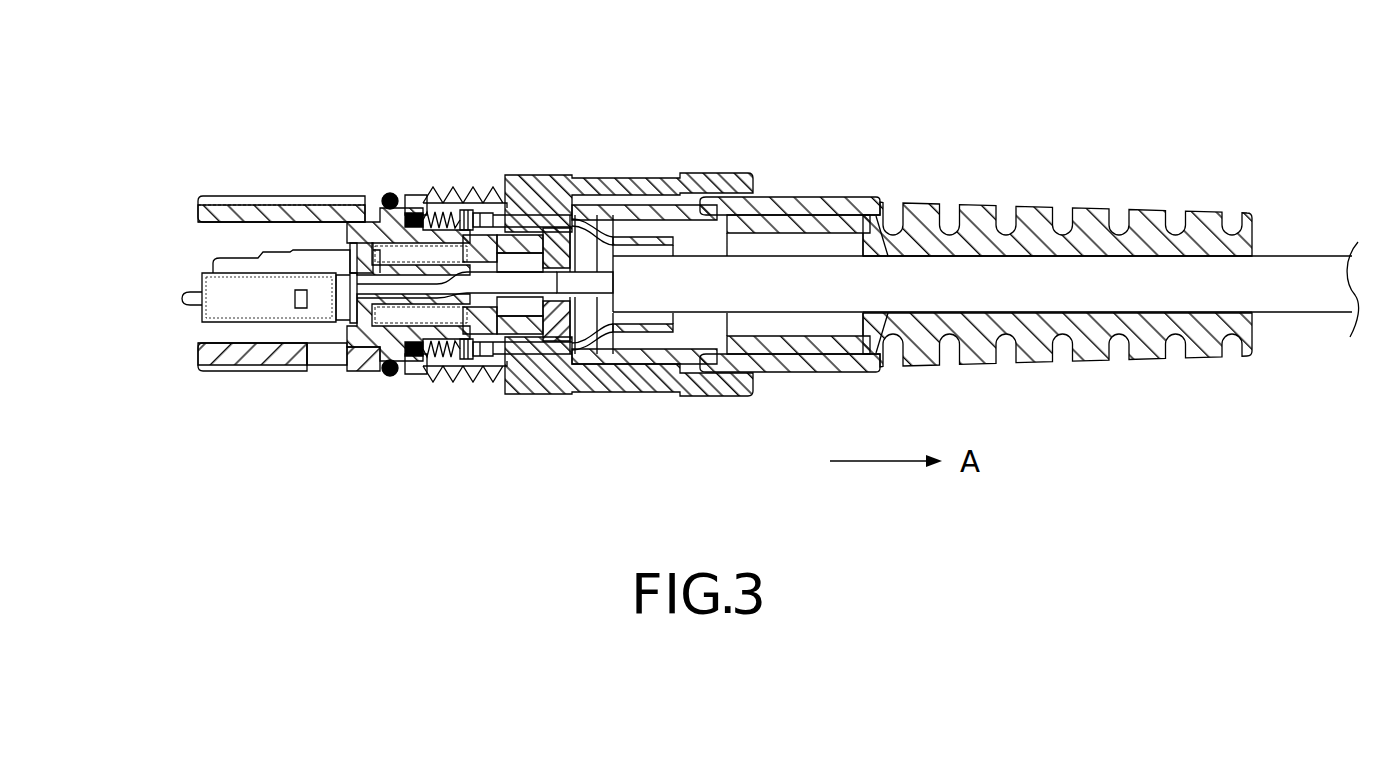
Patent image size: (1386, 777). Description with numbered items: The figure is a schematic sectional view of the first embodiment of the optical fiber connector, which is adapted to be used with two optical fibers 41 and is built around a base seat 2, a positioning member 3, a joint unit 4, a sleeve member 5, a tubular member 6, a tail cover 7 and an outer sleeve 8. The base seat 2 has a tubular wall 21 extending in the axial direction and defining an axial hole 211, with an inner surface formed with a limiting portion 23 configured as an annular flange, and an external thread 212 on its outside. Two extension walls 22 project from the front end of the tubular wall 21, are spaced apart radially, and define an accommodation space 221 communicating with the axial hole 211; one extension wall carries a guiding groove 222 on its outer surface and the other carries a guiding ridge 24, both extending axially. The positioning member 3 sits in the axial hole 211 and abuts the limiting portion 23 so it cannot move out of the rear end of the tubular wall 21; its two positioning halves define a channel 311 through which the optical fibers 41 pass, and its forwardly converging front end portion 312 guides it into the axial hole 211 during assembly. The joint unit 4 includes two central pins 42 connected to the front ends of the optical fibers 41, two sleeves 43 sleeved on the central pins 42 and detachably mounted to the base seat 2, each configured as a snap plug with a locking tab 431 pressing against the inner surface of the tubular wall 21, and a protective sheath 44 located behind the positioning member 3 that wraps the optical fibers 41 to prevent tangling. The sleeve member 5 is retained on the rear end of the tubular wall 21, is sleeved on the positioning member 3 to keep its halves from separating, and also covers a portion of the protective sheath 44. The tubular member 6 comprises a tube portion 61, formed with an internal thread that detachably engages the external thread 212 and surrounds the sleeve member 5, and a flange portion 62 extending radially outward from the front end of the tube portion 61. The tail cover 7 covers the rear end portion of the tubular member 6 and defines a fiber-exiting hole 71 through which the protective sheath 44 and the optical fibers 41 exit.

The base seat 2 is at (346, 257).
The tubular wall 21 is at (431, 296).
The axial hole 211 is at (445, 262).
The external thread 212 is at (452, 384).
The extension walls 22 is at (235, 198).
The accommodation space 221 is at (215, 237).
The guiding groove 222 is at (262, 200).
The limiting portion 23 is at (552, 245).
The guiding ridge 24 is at (277, 368).
The positioning member 3 is at (482, 275).
The channel 311 is at (507, 350).
The front end portion 312 is at (465, 212).
The joint unit 4 is at (718, 280).
The optical fibers 41 is at (433, 220).
The central pins 42 is at (182, 296).
The sleeves 43 is at (230, 320).
The locking tab 431 is at (318, 258).
The protective sheath 44 is at (930, 265).
The sleeve member 5 is at (622, 240).
The tubular member 6 is at (631, 274).
The tube portion 61 is at (641, 358).
The flange portion 62 is at (413, 197).
The tail cover 7 is at (1057, 235).
The fiber-exiting hole 71 is at (1108, 300).
The outer sleeve 8 is at (548, 150).